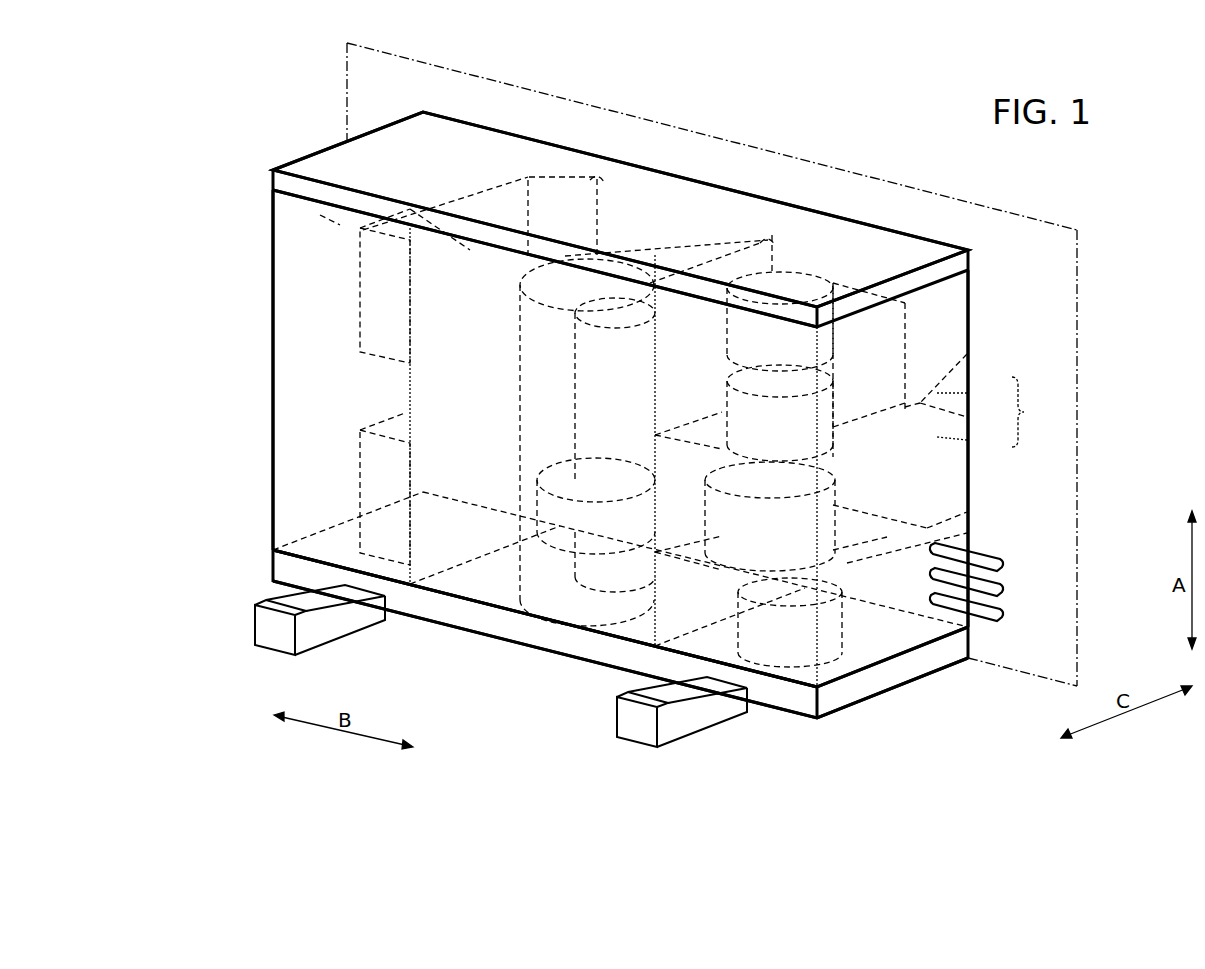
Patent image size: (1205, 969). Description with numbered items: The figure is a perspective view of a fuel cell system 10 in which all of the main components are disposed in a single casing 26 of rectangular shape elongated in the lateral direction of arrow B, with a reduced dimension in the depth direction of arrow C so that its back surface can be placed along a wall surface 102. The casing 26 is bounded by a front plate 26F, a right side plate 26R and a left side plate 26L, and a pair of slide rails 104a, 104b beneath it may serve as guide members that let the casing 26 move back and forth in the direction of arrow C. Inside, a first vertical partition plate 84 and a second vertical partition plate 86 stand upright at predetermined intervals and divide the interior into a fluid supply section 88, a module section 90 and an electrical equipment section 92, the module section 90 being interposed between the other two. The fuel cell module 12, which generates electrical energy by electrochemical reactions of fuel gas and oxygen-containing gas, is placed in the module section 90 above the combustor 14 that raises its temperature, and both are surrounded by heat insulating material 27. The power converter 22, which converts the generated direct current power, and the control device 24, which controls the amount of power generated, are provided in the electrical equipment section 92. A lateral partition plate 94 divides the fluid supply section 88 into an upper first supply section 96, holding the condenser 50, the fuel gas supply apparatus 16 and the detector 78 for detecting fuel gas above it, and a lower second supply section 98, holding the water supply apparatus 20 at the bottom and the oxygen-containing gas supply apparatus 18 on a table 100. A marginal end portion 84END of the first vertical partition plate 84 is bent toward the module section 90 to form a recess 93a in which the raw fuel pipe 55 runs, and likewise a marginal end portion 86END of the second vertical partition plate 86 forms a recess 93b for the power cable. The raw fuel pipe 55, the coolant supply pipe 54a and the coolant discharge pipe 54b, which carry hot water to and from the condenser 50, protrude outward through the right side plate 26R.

The fuel cell system 10 is at (932, 133).
The fuel cell module 12 is at (645, 250).
The combustor 14 is at (585, 596).
The fuel gas supply apparatus 16 is at (724, 392).
The oxygen-containing gas supply apparatus 18 is at (697, 540).
The water supply apparatus 20 is at (843, 628).
The power converter 22 is at (358, 468).
The control device 24 is at (358, 266).
The casing 26 is at (508, 126).
The left side plate 26L is at (302, 324).
The right side plate 26R is at (945, 296).
The front plate 26F is at (470, 580).
The heat insulating material 27 is at (499, 606).
The condenser 50 is at (907, 357).
The coolant supply pipe 54a is at (1006, 587).
The coolant discharge pipe 54b is at (1006, 612).
The raw fuel pipe 55 is at (1006, 562).
The detector 78 is at (726, 333).
The first vertical partition plate 84 is at (646, 413).
The marginal end portion of the first vertical partition plate 84END is at (766, 236).
The second vertical partition plate 86 is at (404, 392).
The marginal end portion of the second vertical partition plate 86END is at (598, 178).
The fluid supply section 88 is at (1032, 412).
The module section 90 is at (464, 262).
The electrical equipment section 92 is at (328, 222).
The recess 93a is at (778, 230).
The recess 93b is at (554, 176).
The lateral partition plate 94 is at (968, 355).
The first supply section 96 is at (970, 391).
The second supply section 98 is at (970, 438).
The table 100 is at (908, 520).
The wall surface 102 is at (1080, 255).
The slide rail 104a is at (703, 722).
The slide rail 104b is at (341, 628).